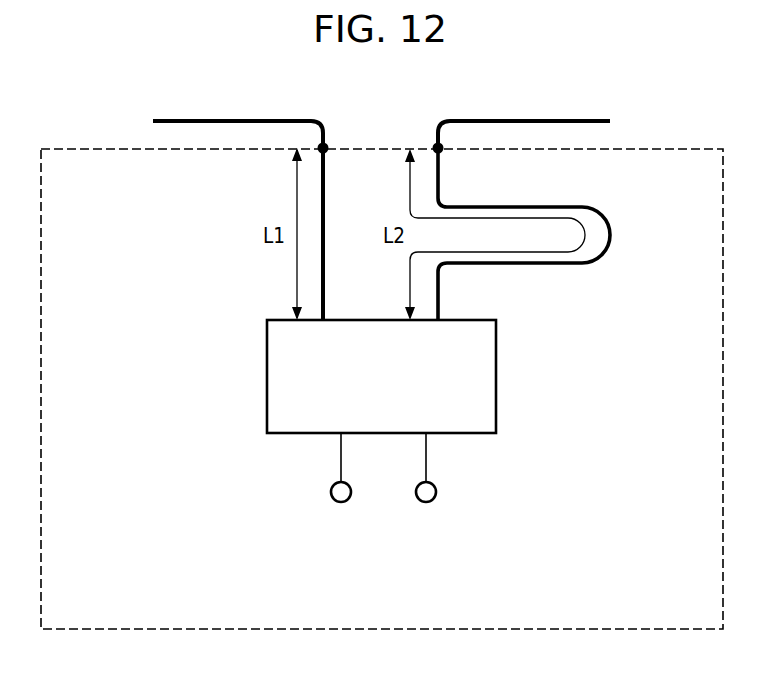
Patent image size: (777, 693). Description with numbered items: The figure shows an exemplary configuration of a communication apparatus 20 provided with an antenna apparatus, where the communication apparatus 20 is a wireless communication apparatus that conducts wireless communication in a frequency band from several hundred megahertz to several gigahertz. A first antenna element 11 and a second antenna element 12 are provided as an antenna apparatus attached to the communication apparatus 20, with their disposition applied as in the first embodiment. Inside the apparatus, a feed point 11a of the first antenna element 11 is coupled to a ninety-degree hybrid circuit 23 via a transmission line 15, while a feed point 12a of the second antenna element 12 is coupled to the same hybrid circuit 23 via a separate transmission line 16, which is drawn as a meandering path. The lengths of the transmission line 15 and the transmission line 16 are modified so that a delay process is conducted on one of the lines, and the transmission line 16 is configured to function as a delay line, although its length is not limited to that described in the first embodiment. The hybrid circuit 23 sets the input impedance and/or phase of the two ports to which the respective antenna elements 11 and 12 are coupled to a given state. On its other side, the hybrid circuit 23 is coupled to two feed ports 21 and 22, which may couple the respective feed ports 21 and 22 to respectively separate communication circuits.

The first antenna element 11 is at (247, 121).
The feed point 11a is at (323, 148).
The second antenna element 12 is at (537, 121).
The feed point 12a is at (438, 148).
The transmission line 15 is at (321, 278).
The transmission line 16 is at (540, 263).
The communication apparatus 20 is at (497, 630).
The feed port 21 is at (341, 502).
The feed port 22 is at (426, 502).
The 90° hybrid circuit 23 is at (496, 378).